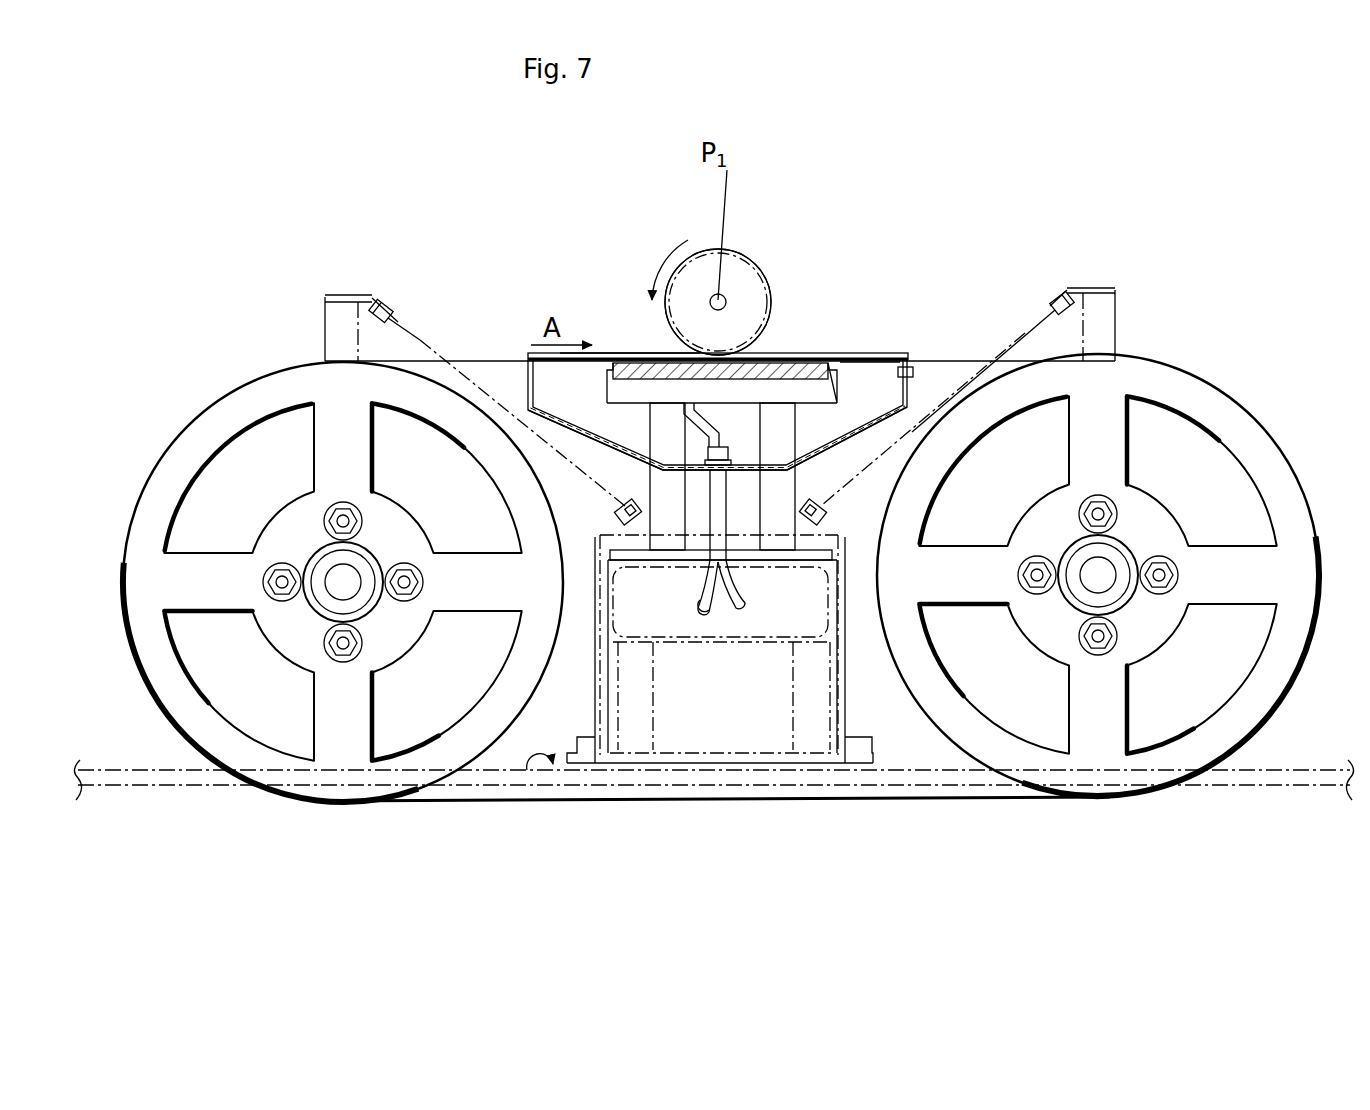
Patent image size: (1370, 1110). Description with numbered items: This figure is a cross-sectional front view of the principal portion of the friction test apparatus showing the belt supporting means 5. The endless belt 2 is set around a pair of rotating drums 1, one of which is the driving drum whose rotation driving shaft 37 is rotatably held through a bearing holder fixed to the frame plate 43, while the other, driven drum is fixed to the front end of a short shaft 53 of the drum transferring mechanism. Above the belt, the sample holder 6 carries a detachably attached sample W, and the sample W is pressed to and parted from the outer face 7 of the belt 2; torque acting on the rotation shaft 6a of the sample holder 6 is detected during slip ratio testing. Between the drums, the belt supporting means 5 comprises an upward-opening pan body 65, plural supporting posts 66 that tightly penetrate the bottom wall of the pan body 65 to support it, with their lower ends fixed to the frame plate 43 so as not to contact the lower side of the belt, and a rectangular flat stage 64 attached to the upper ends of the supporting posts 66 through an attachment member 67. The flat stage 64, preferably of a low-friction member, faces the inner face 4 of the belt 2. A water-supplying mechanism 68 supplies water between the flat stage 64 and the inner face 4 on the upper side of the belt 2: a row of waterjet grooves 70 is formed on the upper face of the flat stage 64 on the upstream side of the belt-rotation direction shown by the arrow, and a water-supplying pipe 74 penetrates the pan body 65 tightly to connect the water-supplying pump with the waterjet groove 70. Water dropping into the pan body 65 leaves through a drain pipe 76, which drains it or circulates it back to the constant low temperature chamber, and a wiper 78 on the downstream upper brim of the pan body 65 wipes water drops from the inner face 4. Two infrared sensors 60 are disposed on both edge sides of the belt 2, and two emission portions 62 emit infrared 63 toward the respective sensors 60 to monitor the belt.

The rotating drums 1 is at (232, 408).
The endless belt 2 is at (494, 356).
The inner face 4 is at (857, 377).
The belt supporting means 5 is at (586, 394).
The sample holder 6 is at (702, 252).
The rotation shaft 6a is at (732, 300).
The outer face 7 is at (842, 355).
The rotation driving shaft 37 is at (1098, 578).
The frame plate 43 is at (523, 770).
The short shaft 53 is at (343, 586).
The sensor 60 is at (624, 521).
The emission portion 62 is at (381, 303).
The infrared 63 is at (425, 338).
The flat stage 64 is at (628, 360).
The pan body 65 is at (574, 434).
The supporting posts 66 is at (662, 477).
The attachment member 67 is at (837, 392).
The water-supplying mechanism 68 is at (725, 616).
The waterjet groove 70 is at (660, 357).
The water-supplying pipe 74 is at (714, 428).
The drain pipe 76 is at (700, 614).
The wiper 78 is at (900, 372).
The sample W is at (748, 245).